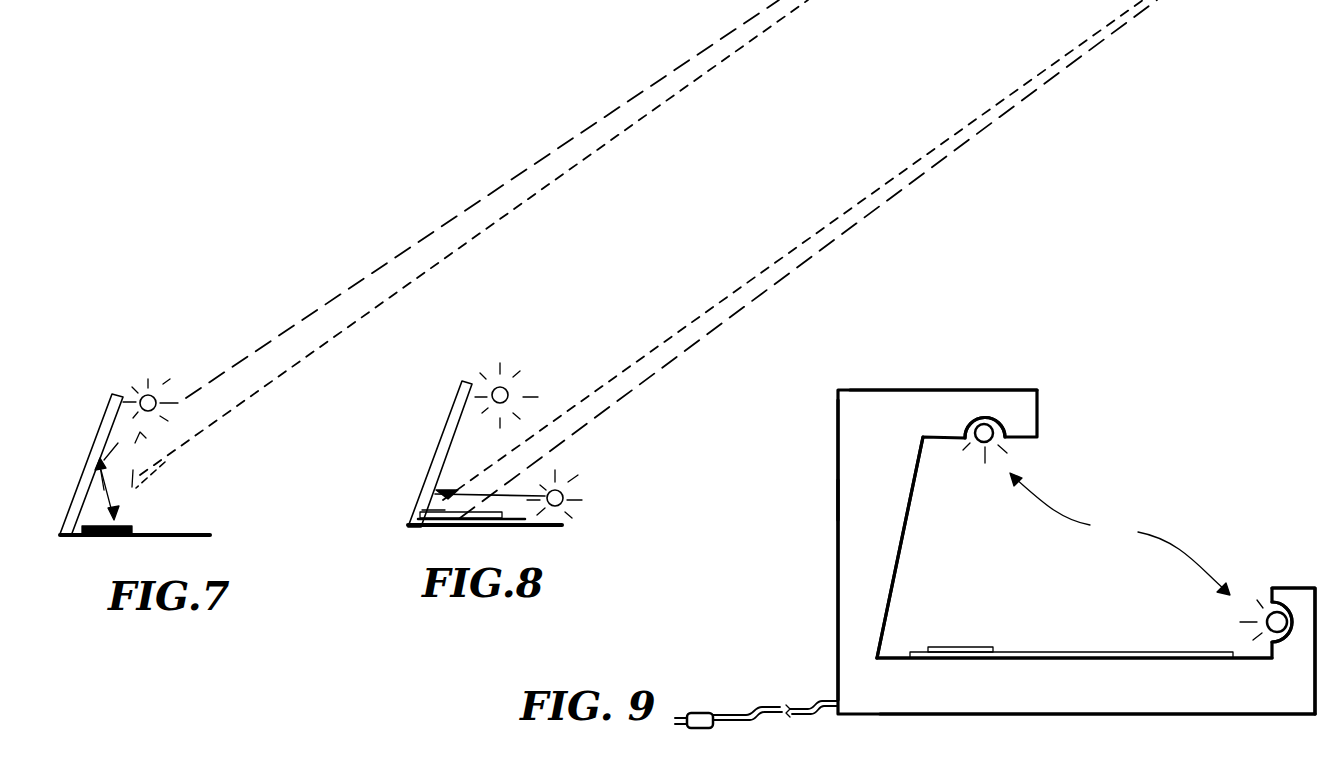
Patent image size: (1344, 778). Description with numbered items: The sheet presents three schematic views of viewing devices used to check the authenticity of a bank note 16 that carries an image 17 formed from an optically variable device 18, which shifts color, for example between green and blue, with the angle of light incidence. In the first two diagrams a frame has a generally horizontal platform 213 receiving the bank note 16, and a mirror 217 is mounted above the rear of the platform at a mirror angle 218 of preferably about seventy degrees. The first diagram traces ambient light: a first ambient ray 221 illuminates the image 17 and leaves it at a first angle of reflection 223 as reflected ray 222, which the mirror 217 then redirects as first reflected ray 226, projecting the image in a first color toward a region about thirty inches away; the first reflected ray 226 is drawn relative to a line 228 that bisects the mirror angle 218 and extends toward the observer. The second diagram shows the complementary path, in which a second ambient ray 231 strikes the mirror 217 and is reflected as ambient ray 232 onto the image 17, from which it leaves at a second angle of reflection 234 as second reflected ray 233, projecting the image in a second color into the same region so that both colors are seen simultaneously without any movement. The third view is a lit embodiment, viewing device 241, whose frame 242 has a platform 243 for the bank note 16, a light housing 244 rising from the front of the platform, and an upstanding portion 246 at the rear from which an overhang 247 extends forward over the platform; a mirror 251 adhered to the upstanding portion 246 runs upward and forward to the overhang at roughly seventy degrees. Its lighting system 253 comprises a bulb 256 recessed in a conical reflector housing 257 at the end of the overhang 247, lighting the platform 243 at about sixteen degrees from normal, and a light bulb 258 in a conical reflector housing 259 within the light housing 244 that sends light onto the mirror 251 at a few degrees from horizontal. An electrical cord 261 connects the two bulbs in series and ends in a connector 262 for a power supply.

In FIG. 9, the bank note 16 is at (1150, 652).
In FIG. 9, the image 17 is at (973, 647).
In FIG. 7, the optically variable device 18 is at (135, 531).
In FIG. 8, the optically variable device 18 is at (422, 510).
In FIG. 9, the optically variable device 18 is at (993, 651).
In FIG. 7, the platform 213 is at (210, 534).
In FIG. 8, the platform 213 is at (560, 523).
In FIG. 7, the mirror 217 is at (125, 397).
In FIG. 8, the mirror 217 is at (478, 383).
In FIG. 7, the mirror angle 218 is at (76, 515).
In FIG. 7, the first ambient ray 221 is at (133, 470).
In FIG. 7, the reflected ray 222 is at (140, 490).
In FIG. 7, the first angle of reflection 223 is at (100, 514).
In FIG. 7, the first reflected ray 226 is at (407, 251).
In FIG. 7, the line 228 is at (483, 231).
In FIG. 8, the line 228 is at (783, 258).
In FIG. 8, the second ambient ray 231 is at (450, 514).
In FIG. 8, the ambient ray 232 is at (417, 498).
In FIG. 8, the second reflected ray 233 is at (922, 175).
In FIG. 8, the second angle of reflection 234 is at (485, 514).
In FIG. 9, the viewing device 241 is at (907, 368).
In FIG. 9, the frame 242 is at (832, 451).
In FIG. 9, the platform 243 is at (1078, 672).
In FIG. 9, the light housing 244 is at (1293, 596).
In FIG. 9, the upstanding portion 246 is at (850, 500).
In FIG. 9, the overhang 247 is at (997, 391).
In FIG. 9, the mirror 251 is at (916, 508).
In FIG. 9, the lighting system 253 is at (1120, 534).
In FIG. 9, the bulb 256 is at (997, 440).
In FIG. 9, the reflector housing 257 is at (1005, 430).
In FIG. 9, the light bulb 258 is at (1260, 610).
In FIG. 9, the reflector housing 259 is at (1257, 641).
In FIG. 9, the electrical cord 261 is at (803, 710).
In FIG. 9, the connector 262 is at (700, 715).